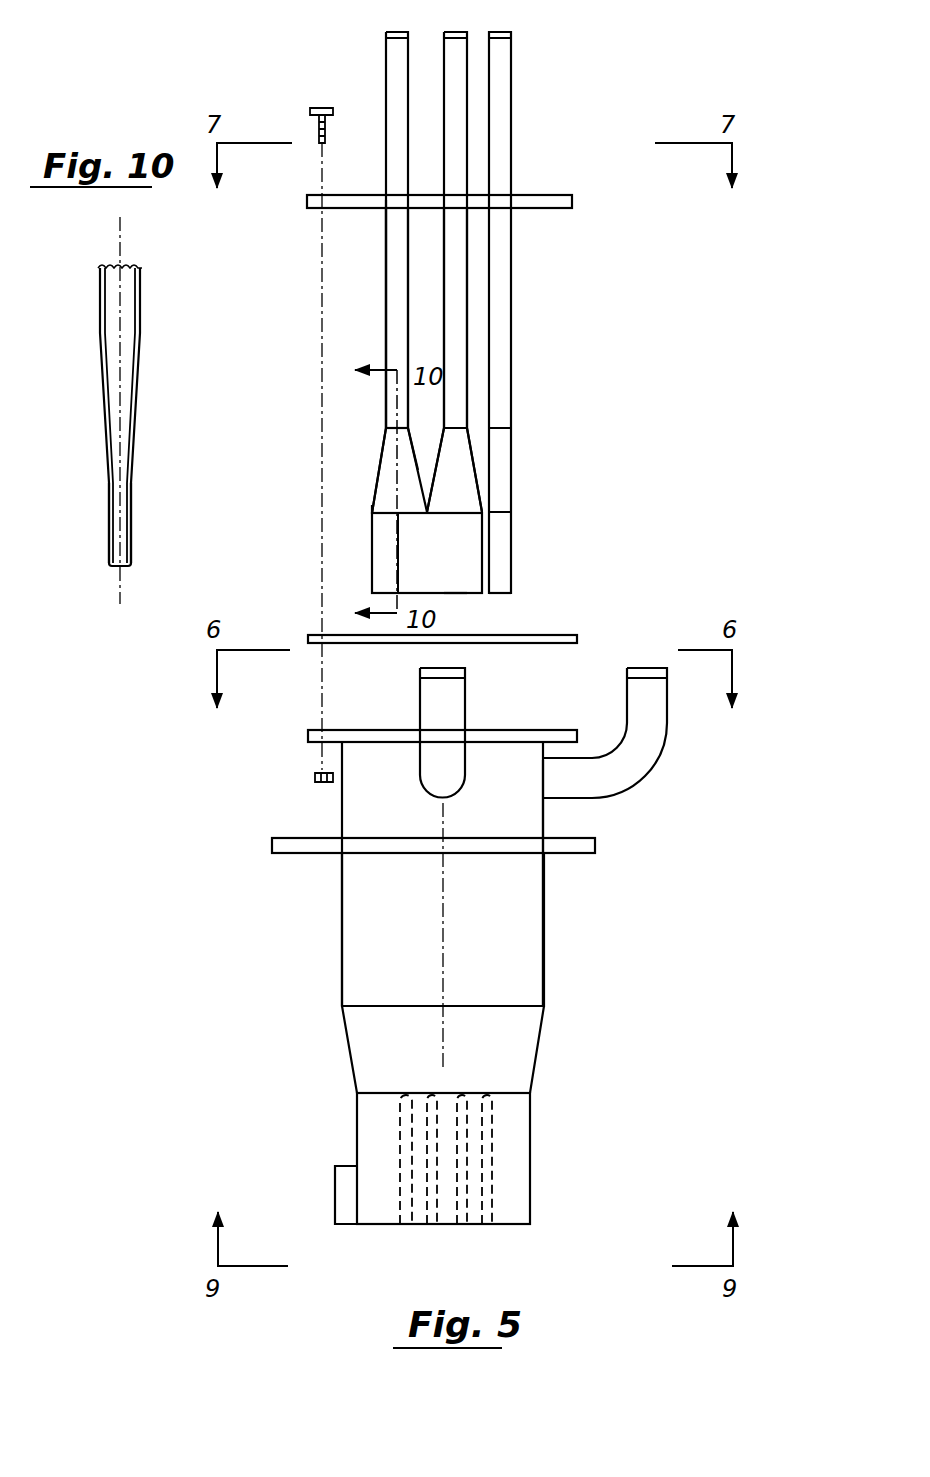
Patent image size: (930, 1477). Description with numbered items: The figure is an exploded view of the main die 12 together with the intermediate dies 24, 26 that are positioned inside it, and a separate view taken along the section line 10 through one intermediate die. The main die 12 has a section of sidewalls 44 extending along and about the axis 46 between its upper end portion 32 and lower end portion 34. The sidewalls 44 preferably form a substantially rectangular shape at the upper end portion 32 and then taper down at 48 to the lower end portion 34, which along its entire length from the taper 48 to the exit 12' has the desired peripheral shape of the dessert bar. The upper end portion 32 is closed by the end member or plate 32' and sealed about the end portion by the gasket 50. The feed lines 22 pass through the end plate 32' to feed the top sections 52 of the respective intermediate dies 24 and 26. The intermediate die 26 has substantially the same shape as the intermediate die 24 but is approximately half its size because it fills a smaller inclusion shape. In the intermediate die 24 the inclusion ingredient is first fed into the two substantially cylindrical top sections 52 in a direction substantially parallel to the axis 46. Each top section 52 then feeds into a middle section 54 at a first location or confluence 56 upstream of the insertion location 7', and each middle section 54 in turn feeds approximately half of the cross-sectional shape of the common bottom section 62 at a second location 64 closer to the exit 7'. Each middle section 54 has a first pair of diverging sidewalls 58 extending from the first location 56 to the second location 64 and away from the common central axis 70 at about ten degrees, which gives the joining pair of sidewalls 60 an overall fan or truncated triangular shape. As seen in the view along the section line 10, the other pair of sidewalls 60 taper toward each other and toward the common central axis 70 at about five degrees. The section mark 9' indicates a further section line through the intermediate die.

In FIG. 5, the section line 10 is at (422, 705).
In FIG. 5, the main die 12 is at (605, 883).
In FIG. 5, the exit 12' is at (443, 1254).
In FIG. 5, the feed lines 22 is at (453, 70).
In FIG. 5, the intermediate die 24 is at (384, 309).
In FIG. 5, the intermediate die 26 is at (513, 313).
In FIG. 5, the upper end portion 32 is at (442, 836).
In FIG. 5, the end member or plate 32' is at (444, 169).
In FIG. 5, the lower end portion 34 is at (535, 1140).
In FIG. 5, the sidewalls 44 is at (511, 948).
In FIG. 5, the axis 46 is at (443, 897).
In FIG. 5, the taper 48 is at (350, 1060).
In FIG. 5, the gasket 50 is at (570, 634).
In FIG. 5, the top sections 52 is at (445, 249).
In FIG. 10, the top sections 52 is at (144, 316).
In FIG. 5, the middle section 54 is at (380, 450).
In FIG. 5, the first location or confluence 56 is at (386, 430).
In FIG. 5, the diverging sidewalls 58 is at (378, 478).
In FIG. 5, the sidewalls 60 is at (457, 473).
In FIG. 10, the sidewalls 60 is at (107, 388).
In FIG. 5, the common bottom section 62 is at (458, 558).
In FIG. 10, the common bottom section 62 is at (109, 485).
In FIG. 5, the second location 64 is at (384, 512).
In FIG. 5, the common central axis 70 is at (397, 539).
In FIG. 10, the common central axis 70 is at (117, 240).
In FIG. 5, the insertion location or exit 7' is at (466, 611).
In FIG. 5, the section line 9' is at (532, 610).